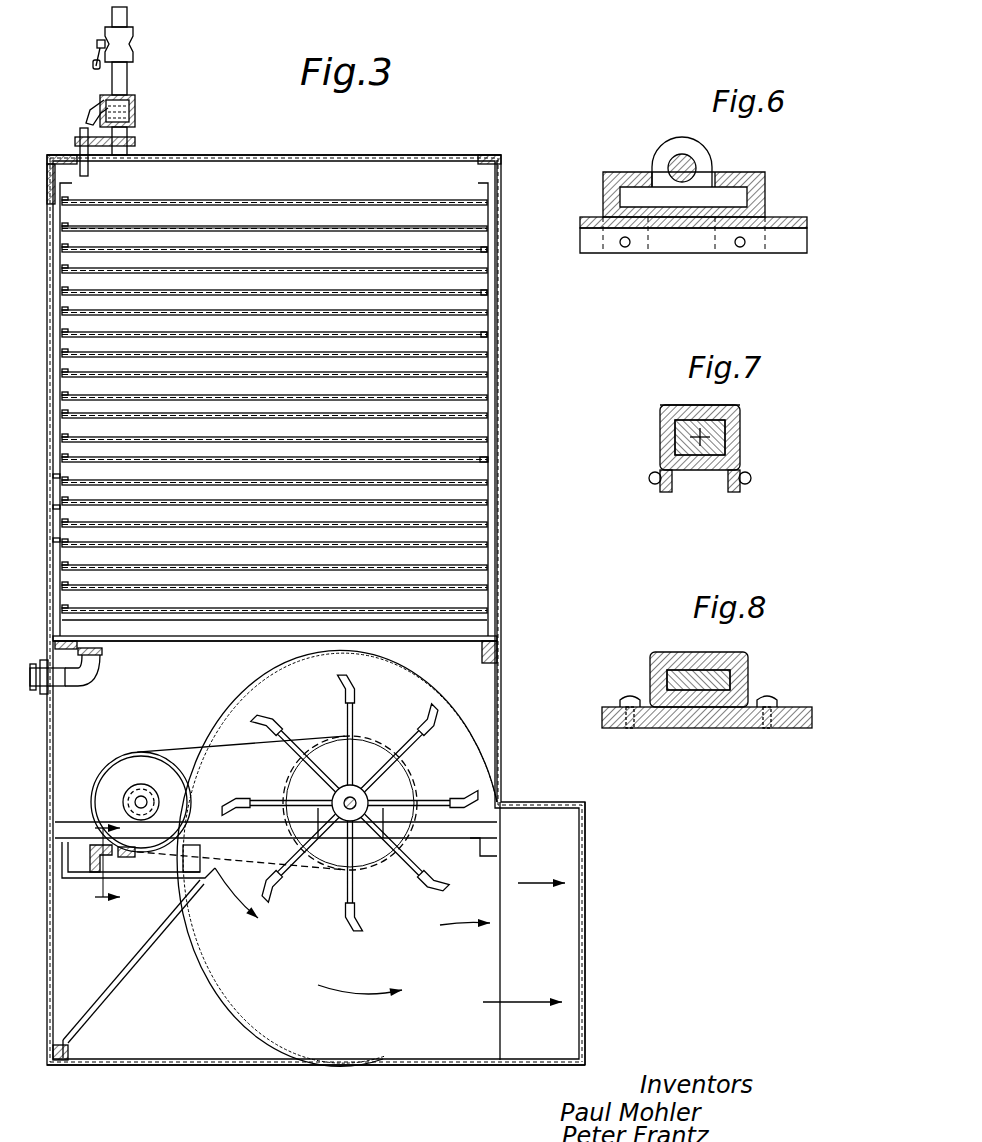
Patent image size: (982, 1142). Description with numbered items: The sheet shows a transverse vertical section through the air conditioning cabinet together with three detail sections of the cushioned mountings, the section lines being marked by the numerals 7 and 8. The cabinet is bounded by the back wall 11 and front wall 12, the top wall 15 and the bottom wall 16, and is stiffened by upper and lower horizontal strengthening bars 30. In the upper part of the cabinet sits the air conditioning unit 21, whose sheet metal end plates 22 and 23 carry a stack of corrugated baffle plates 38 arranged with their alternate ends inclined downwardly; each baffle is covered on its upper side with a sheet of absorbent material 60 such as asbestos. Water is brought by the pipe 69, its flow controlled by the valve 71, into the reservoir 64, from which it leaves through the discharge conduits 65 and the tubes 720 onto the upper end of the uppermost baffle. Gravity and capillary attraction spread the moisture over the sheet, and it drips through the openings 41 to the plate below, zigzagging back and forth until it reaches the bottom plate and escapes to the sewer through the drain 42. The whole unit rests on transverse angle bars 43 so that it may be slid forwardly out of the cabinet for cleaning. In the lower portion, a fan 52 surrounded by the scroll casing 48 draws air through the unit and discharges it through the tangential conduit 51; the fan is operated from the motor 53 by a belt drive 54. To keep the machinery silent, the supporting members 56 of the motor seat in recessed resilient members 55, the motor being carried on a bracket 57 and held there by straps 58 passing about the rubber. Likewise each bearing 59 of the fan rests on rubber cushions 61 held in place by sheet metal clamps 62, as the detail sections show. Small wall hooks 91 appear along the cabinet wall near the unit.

In FIG. 3, the back wall 11 is at (497, 548).
In FIG. 3, the front wall 12 is at (52, 455).
In FIG. 3, the top wall 15 is at (318, 156).
In FIG. 3, the bottom wall 16 is at (185, 1067).
In FIG. 3, the air conditioning unit 21 is at (499, 397).
In FIG. 3, the end plate 22 is at (497, 470).
In FIG. 3, the end plate 23 is at (57, 388).
In FIG. 3, the horizontal strengthening bars 30 is at (60, 157).
In FIG. 3, the baffle plates 38 is at (377, 270).
In FIG. 3, the openings 41 is at (497, 340).
In FIG. 3, the drain 42 is at (97, 664).
In FIG. 3, the angle bars 43 is at (225, 646).
In FIG. 3, the scroll casing 48 is at (202, 727).
In FIG. 3, the tangential opening or conduit 51 is at (578, 953).
In FIG. 3, the fan 52 is at (354, 716).
In FIG. 3, the motor 53 is at (126, 762).
In FIG. 3, the belt drive 54 is at (234, 770).
In FIG. 3, the resilient member 55 is at (120, 862).
In FIG. 8, the resilient member 55 is at (702, 710).
In FIG. 3, the supporting members 56 is at (140, 850).
In FIG. 8, the supporting members 56 is at (680, 652).
In FIG. 3, the bracket 57 is at (80, 885).
In FIG. 3, the straps 58 is at (192, 862).
In FIG. 8, the straps 58 is at (750, 663).
In FIG. 6, the bearing 59 is at (660, 178).
In FIG. 7, the bearing 59 is at (702, 468).
In FIG. 3, the sheet of absorbent material 60 is at (238, 265).
In FIG. 6, the rubber cushions 61 is at (700, 220).
In FIG. 7, the rubber cushions 61 is at (736, 410).
In FIG. 3, the sheet metal clamps 62 is at (354, 872).
In FIG. 6, the sheet metal clamps 62 is at (768, 178).
In FIG. 7, the sheet metal clamps 62 is at (742, 429).
In FIG. 3, the reservoir 64 is at (135, 118).
In FIG. 3, the discharge conduits 65 is at (90, 108).
In FIG. 3, the pipe 69 is at (128, 76).
In FIG. 3, the valve 71 is at (96, 45).
In FIG. 3, the tubes 720 is at (90, 170).
In FIG. 3, the wall hooks 91 is at (60, 540).
In FIG. 6, the section line 7 is at (736, 160).
In FIG. 3, the section line 8 is at (107, 858).